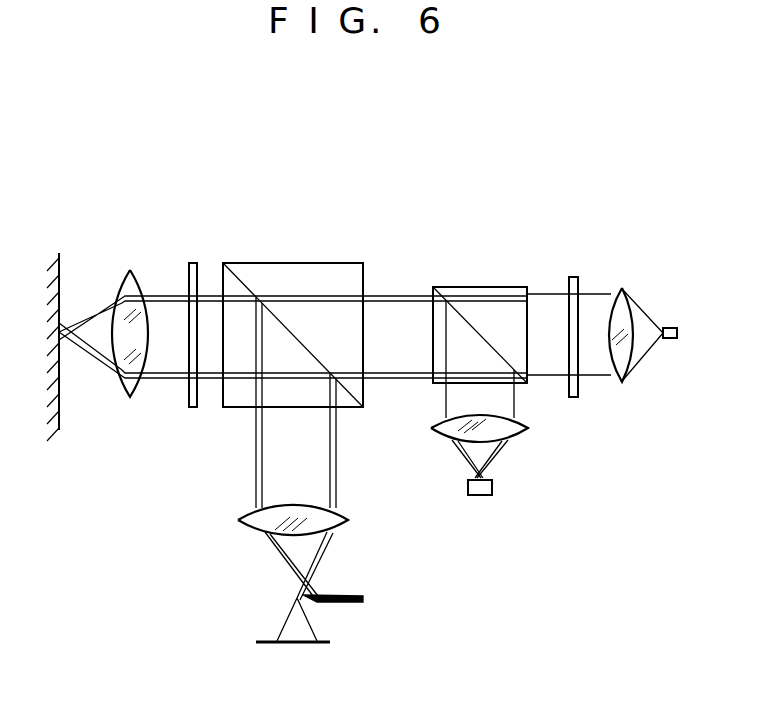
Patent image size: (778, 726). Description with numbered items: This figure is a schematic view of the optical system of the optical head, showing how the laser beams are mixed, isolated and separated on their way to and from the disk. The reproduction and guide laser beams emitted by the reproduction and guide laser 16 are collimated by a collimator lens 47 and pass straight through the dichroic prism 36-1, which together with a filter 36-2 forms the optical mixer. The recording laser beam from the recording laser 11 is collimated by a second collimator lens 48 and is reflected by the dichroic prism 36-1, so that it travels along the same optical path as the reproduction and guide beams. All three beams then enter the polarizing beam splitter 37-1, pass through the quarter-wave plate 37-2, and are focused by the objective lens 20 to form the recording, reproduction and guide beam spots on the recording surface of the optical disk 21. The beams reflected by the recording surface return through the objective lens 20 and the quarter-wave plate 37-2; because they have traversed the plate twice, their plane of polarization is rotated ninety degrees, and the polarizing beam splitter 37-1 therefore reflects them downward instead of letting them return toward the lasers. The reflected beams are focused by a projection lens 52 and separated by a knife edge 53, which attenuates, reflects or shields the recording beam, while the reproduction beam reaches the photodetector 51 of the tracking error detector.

The recording laser 11 is at (671, 327).
The reproduction and guide laser 16 is at (477, 496).
The objective lens 20 is at (131, 273).
The optical disk 21 is at (63, 273).
The dichroic prism 36-1 is at (473, 287).
The filter 36-2 is at (576, 277).
The polarizing beam splitter 37-1 is at (300, 262).
The λ/4 plate 37-2 is at (196, 262).
The collimator lens 47 is at (527, 428).
The collimator lens 48 is at (627, 292).
The photodetector 51 is at (297, 645).
The projection lens 52 is at (348, 519).
The knife edge 53 is at (351, 594).